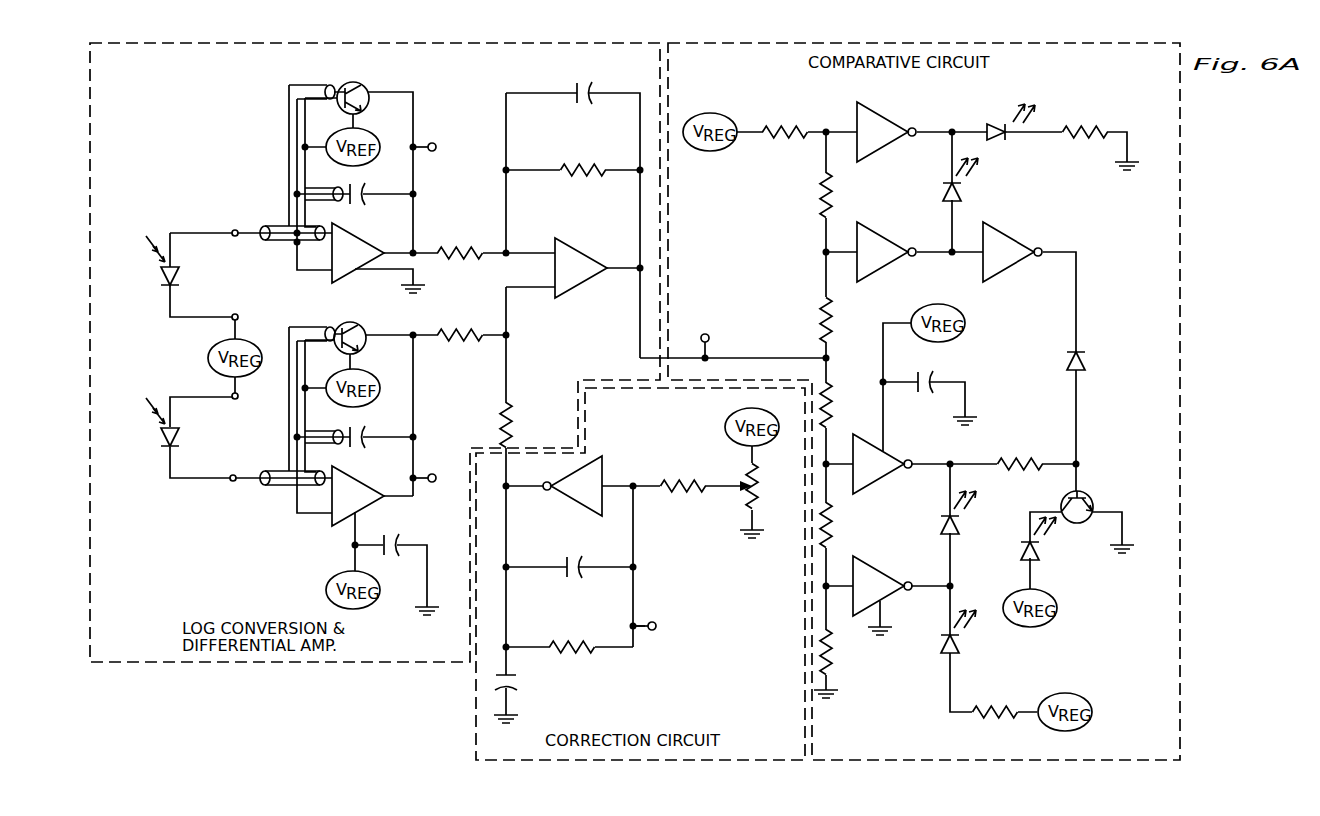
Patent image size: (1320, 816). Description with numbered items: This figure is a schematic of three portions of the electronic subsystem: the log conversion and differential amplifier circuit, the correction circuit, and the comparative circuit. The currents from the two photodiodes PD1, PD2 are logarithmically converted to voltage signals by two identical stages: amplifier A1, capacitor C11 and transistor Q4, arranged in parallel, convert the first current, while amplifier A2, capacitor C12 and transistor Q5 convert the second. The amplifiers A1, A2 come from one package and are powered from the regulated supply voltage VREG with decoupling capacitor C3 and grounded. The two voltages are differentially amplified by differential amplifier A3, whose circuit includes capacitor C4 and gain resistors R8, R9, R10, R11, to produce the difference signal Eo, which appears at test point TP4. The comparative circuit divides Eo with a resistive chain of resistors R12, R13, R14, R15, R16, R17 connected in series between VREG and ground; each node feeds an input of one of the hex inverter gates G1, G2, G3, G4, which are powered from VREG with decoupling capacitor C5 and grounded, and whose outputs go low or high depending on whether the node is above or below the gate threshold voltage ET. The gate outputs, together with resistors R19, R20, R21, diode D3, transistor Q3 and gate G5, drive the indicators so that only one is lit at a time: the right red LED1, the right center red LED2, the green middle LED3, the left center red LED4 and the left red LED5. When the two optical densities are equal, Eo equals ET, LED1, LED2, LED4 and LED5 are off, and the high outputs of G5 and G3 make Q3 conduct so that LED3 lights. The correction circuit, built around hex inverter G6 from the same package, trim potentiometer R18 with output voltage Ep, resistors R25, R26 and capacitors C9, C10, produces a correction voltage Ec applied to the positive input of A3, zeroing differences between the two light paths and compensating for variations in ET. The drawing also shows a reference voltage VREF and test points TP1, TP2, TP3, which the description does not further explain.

The photodiode PD1 is at (162, 276).
The photodiode PD2 is at (162, 462).
The regulated supply voltage VREG is at (650, 422).
The reference voltage VREF is at (353, 267).
The transistor Q4 is at (370, 80).
The transistor Q5 is at (368, 320).
The transistor Q3 is at (1090, 487).
The test point TP1 is at (441, 147).
The test point TP2 is at (441, 478).
The test point TP3 is at (661, 626).
The test point TP4 is at (704, 327).
The capacitor C11 is at (366, 195).
The capacitor C12 is at (366, 438).
The decoupling capacitor C3 is at (397, 541).
The capacitor C4 is at (578, 90).
The capacitor C9 is at (522, 684).
The capacitor C10 is at (592, 562).
The decoupling capacitor C5 is at (939, 373).
The resistor R8 is at (460, 325).
The resistor R9 is at (519, 425).
The resistor R10 is at (461, 243).
The resistor R11 is at (583, 160).
The resistor R12 is at (785, 121).
The resistor R13 is at (843, 195).
The resistor R14 is at (843, 320).
The resistor R15 is at (843, 405).
The resistor R16 is at (843, 525).
The resistor R17 is at (843, 652).
The trim potentiometer R18 is at (769, 486).
The resistor R19 is at (995, 701).
The resistor R20 is at (1020, 454).
The resistor R21 is at (1085, 120).
The resistor R25 is at (683, 495).
The resistor R26 is at (572, 636).
The amplifier A1 is at (363, 263).
The amplifier A2 is at (363, 506).
The differential amplifier A3 is at (581, 277).
The hex inverter gate G1 is at (882, 142).
The hex inverter gate G2 is at (882, 262).
The hex inverter gate G3 is at (878, 474).
The hex inverter gate G4 is at (878, 596).
The hex inverter gate G5 is at (1008, 262).
The hex inverter G6 is at (587, 496).
The right red LED LED1 is at (985, 122).
The right center red LED LED2 is at (962, 184).
The green middle LED LED3 is at (1040, 552).
The left center red LED LED4 is at (940, 522).
The left red LED LED5 is at (960, 636).
The diode D3 is at (1085, 358).
The correction voltage Ec is at (506, 480).
The threshold voltage ET is at (620, 482).
The potentiometer output voltage Ep is at (722, 482).
The difference signal Eo is at (792, 357).